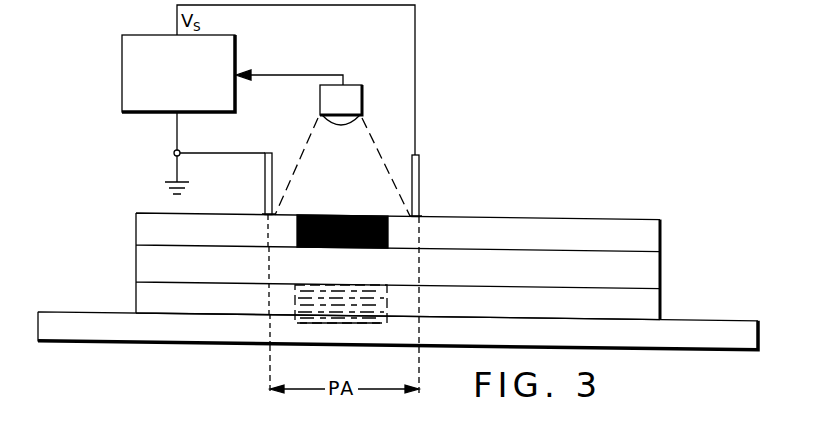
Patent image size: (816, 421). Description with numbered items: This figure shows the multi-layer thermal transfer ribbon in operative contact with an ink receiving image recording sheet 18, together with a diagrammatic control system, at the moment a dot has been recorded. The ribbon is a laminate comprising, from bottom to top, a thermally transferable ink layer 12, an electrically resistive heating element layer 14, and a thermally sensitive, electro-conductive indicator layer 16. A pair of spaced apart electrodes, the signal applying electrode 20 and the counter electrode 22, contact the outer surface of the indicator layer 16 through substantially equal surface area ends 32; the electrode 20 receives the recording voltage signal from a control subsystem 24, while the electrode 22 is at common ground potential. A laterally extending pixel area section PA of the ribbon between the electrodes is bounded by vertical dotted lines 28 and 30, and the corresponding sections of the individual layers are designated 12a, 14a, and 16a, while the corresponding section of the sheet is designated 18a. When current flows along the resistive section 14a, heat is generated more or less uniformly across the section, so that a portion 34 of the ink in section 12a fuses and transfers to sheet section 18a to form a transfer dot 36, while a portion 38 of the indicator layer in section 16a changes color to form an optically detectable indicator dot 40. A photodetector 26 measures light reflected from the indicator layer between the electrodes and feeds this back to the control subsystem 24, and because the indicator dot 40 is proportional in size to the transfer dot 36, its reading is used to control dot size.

The thermally transferable ink layer 12 is at (150, 299).
The section of ink layer 12a is at (279, 296).
The electrically resistive heating element layer 14 is at (148, 264).
The section of resistive layer 14a is at (279, 262).
The thermally sensitive and electro-conductive indicator layer 16 is at (150, 230).
The section of indicator layer 16a is at (278, 228).
The image recording sheet 18 is at (79, 335).
The pixel area section of sheet 18a is at (278, 331).
The signal applying electrode 20 is at (419, 172).
The counter electrode 22 is at (265, 170).
The control subsystem 24 is at (122, 73).
The photodetector 26 is at (362, 94).
The vertical dotted line 28 is at (420, 317).
The vertical dotted line 30 is at (271, 381).
The surface area ends 32 is at (265, 213).
The portion of ink 34 is at (386, 300).
The transfer dot 36 is at (365, 324).
The portion of indicator layer 38 is at (386, 233).
The indicator dot 40 is at (350, 216).